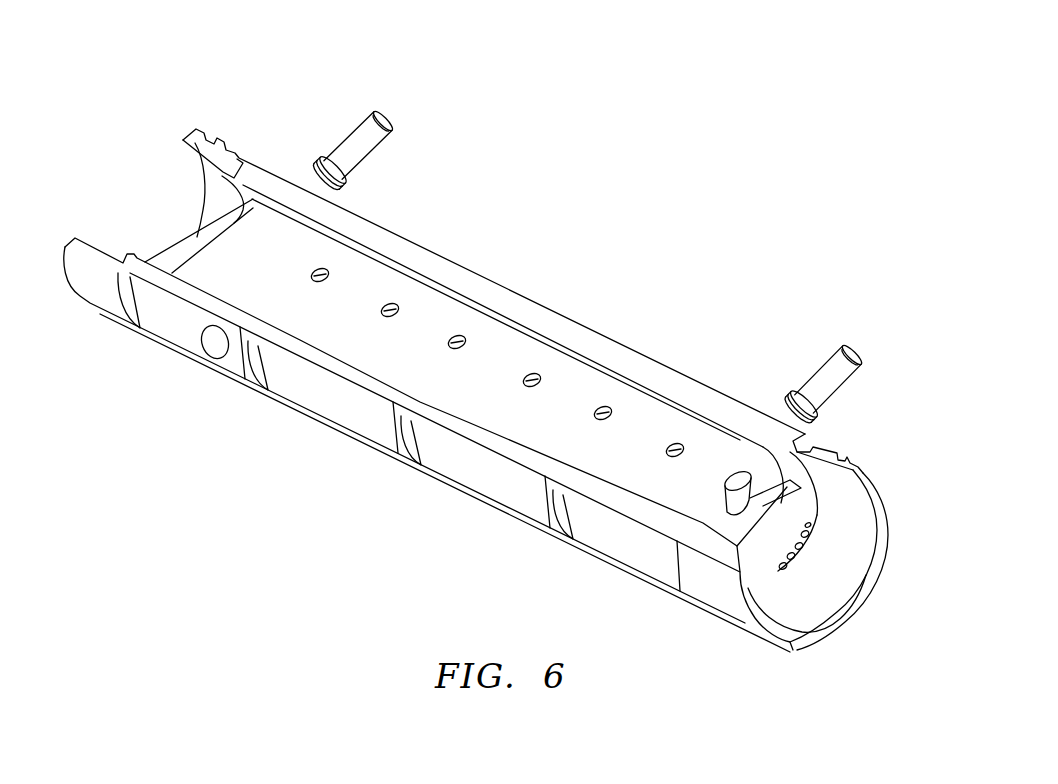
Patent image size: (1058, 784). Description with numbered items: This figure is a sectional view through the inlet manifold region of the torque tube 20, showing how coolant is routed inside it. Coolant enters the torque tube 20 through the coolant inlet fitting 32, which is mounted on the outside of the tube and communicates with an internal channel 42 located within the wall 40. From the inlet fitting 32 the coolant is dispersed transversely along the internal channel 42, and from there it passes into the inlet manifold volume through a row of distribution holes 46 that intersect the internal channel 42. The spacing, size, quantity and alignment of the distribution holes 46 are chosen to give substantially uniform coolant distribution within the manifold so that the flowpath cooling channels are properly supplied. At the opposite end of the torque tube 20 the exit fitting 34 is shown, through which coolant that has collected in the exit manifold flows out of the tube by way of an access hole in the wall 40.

The torque tube 20 is at (553, 305).
The coolant inlet fitting 32 is at (833, 362).
The exit fitting 34 is at (353, 138).
The wall 40 is at (647, 417).
The internal channel 42 is at (742, 497).
The distribution holes 46 is at (460, 335).